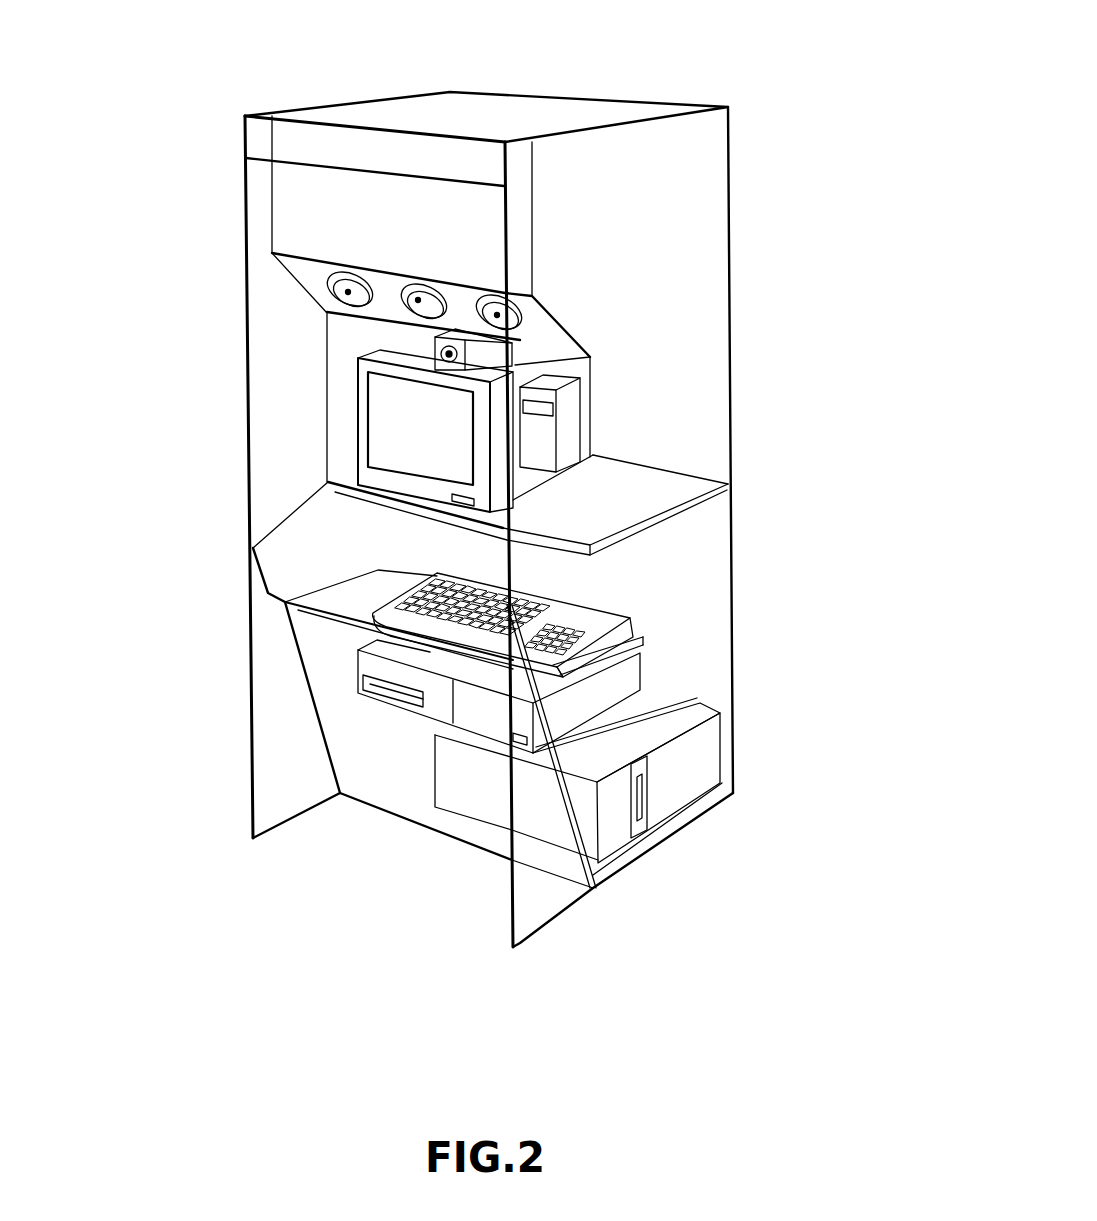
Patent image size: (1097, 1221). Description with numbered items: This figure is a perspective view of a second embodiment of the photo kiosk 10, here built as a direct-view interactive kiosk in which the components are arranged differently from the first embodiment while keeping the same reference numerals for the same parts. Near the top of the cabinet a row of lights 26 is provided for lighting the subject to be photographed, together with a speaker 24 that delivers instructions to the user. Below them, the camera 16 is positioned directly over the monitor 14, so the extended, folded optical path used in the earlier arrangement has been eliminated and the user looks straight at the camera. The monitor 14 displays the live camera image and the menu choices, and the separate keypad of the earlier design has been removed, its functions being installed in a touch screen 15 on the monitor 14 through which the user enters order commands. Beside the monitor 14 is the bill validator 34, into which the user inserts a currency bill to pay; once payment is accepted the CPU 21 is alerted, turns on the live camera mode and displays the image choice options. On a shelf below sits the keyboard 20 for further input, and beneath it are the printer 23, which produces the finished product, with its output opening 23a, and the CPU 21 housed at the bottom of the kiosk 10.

The photo kiosk 10 is at (627, 78).
The monitor 14 is at (360, 443).
The touch screen 15 is at (413, 430).
The camera 16 is at (433, 338).
The keyboard 20 is at (285, 602).
The CPU 21 is at (698, 773).
The printer 23 is at (453, 716).
The printer slot 23a is at (382, 689).
The speaker 24 is at (192, 160).
The lights 26 is at (343, 285).
The bill validator 34 is at (573, 413).